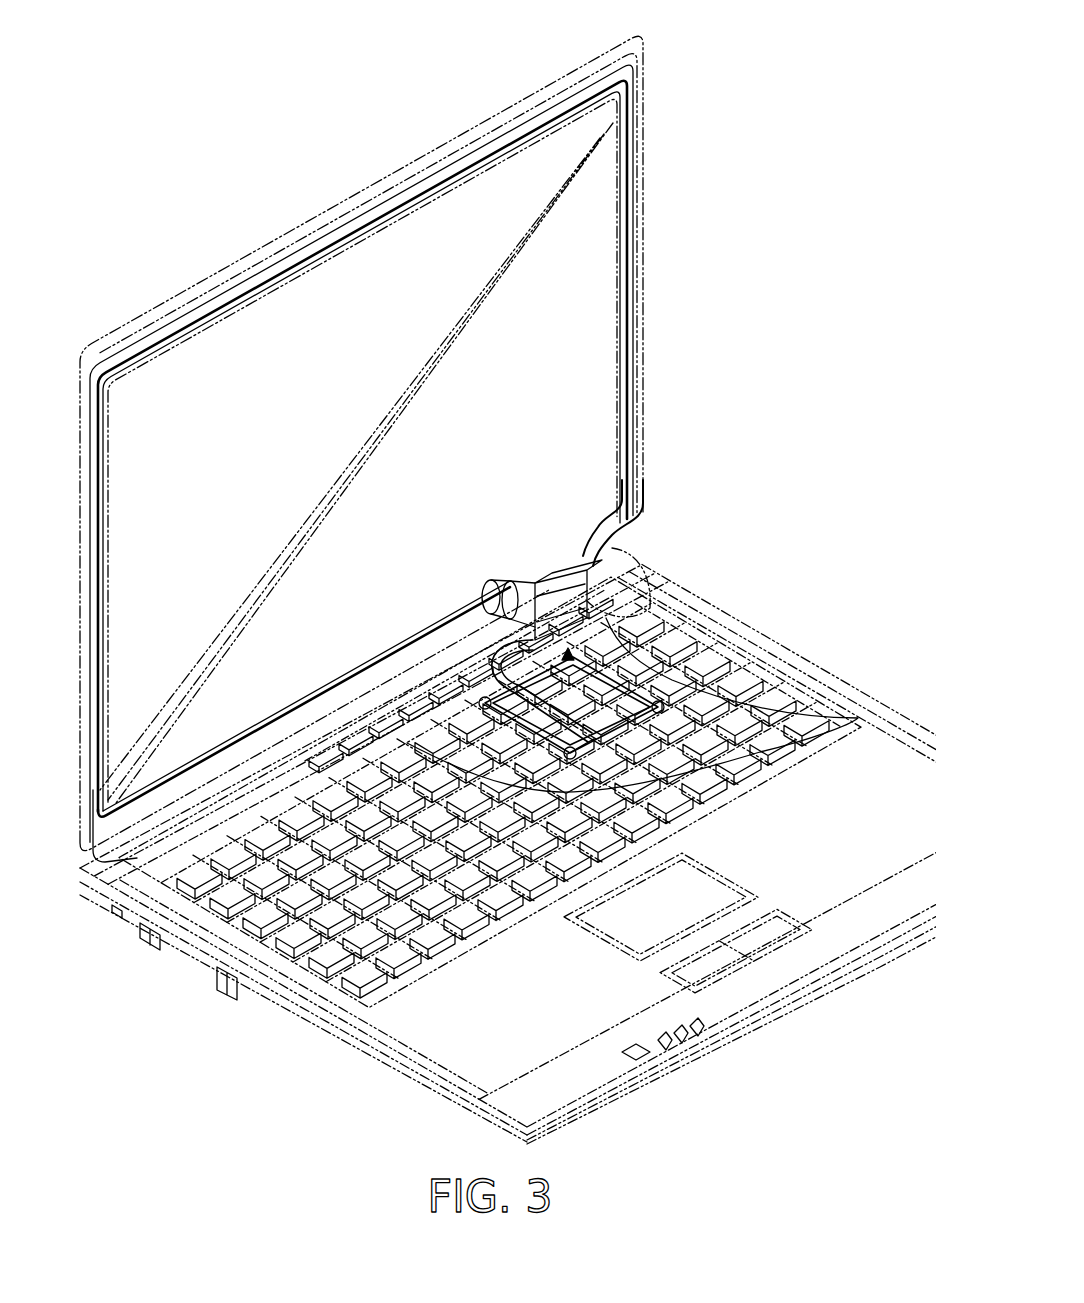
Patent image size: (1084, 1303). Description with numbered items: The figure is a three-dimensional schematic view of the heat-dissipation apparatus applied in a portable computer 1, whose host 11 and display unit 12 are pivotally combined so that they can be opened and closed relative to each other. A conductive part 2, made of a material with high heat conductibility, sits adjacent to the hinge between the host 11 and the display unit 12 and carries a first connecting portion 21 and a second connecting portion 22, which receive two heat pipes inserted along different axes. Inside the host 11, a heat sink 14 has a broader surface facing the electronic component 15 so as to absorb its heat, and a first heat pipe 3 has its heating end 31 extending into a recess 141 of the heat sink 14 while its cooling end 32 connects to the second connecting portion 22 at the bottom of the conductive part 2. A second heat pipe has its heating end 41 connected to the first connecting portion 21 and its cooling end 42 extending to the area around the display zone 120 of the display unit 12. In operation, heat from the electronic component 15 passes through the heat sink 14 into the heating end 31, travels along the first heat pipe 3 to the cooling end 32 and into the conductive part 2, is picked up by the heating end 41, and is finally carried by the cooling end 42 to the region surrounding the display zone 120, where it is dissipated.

The portable computer 1 is at (778, 1010).
The host 11 is at (780, 640).
The display unit 12 is at (340, 206).
The display zone 120 is at (607, 325).
The heat sink 14 is at (710, 637).
The recess 141 is at (478, 668).
The electronic component 15 is at (808, 681).
The conductive part 2 is at (612, 592).
The first connecting portion 21 is at (496, 590).
The second connecting portion 22 is at (498, 615).
The first heat pipe 3 is at (505, 665).
The heating end 31 is at (400, 644).
The cooling end 32 is at (618, 636).
The heating end 41 is at (572, 550).
The cooling end 42 is at (414, 190).